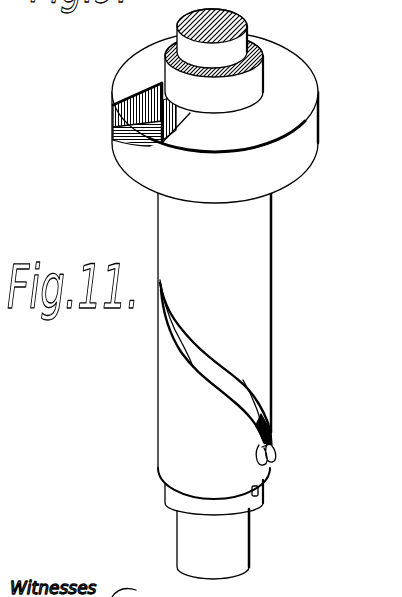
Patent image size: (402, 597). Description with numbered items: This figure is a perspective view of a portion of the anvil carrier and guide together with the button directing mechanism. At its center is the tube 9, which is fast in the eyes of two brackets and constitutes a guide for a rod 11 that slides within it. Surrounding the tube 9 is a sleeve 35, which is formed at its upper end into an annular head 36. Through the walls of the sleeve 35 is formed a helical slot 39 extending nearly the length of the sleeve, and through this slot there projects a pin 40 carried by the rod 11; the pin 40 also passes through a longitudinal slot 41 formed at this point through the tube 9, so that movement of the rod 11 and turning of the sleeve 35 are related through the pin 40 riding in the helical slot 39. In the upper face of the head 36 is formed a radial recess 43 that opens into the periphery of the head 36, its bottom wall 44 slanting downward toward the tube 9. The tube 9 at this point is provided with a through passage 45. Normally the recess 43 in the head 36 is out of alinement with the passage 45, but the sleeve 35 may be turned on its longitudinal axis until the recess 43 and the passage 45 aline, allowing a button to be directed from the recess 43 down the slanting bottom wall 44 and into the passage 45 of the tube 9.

The tube 9 is at (253, 77).
The rod 11 is at (237, 540).
The sleeve 35 is at (252, 222).
The annular head 36 is at (305, 125).
The helical slot 39 is at (243, 380).
The pin 40 is at (340, 443).
The longitudinal slot 41 is at (326, 500).
The radial recess 43 is at (112, 108).
The bottom wall 44 is at (133, 137).
The through passage 45 is at (173, 116).